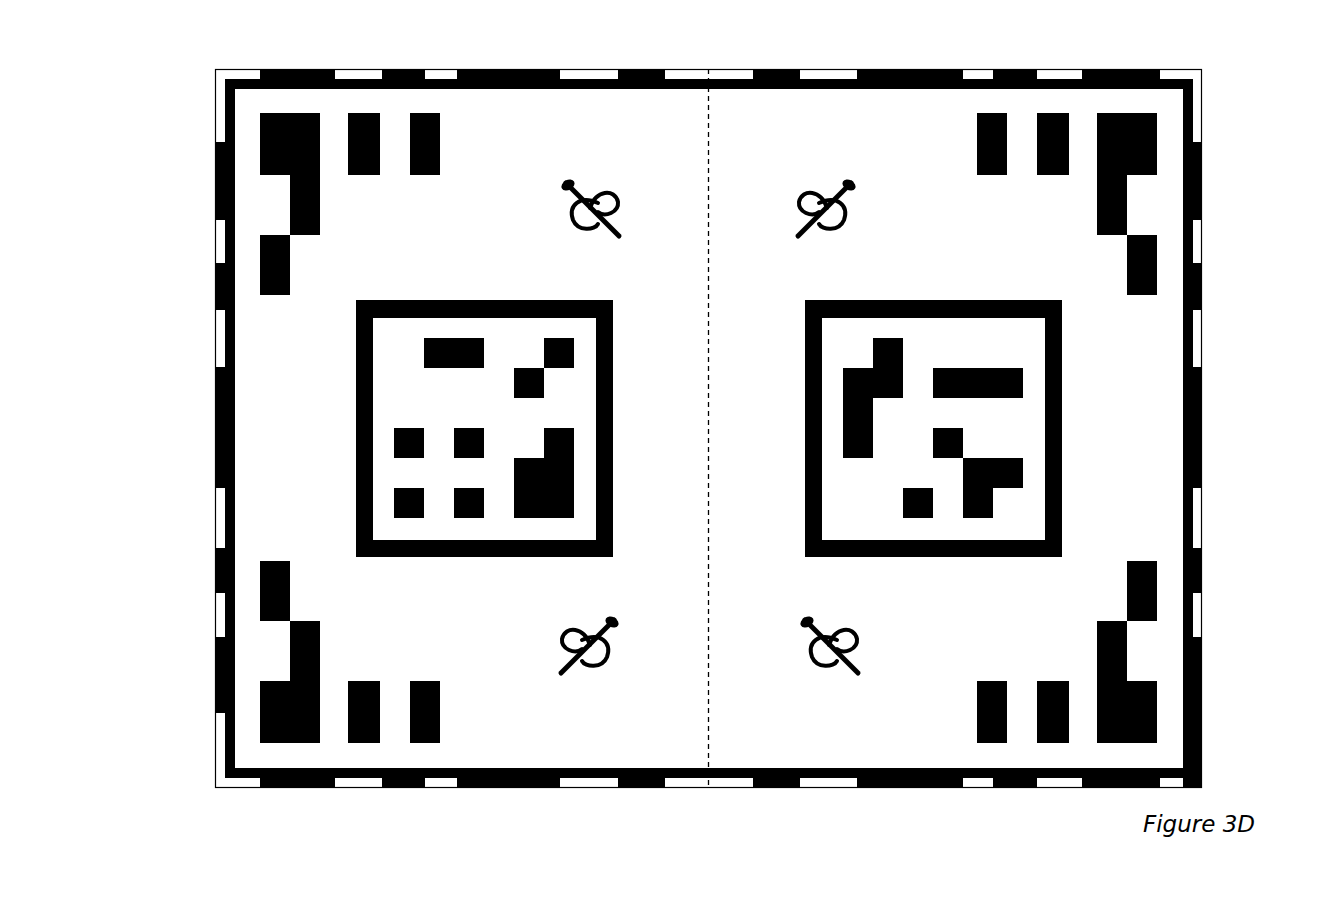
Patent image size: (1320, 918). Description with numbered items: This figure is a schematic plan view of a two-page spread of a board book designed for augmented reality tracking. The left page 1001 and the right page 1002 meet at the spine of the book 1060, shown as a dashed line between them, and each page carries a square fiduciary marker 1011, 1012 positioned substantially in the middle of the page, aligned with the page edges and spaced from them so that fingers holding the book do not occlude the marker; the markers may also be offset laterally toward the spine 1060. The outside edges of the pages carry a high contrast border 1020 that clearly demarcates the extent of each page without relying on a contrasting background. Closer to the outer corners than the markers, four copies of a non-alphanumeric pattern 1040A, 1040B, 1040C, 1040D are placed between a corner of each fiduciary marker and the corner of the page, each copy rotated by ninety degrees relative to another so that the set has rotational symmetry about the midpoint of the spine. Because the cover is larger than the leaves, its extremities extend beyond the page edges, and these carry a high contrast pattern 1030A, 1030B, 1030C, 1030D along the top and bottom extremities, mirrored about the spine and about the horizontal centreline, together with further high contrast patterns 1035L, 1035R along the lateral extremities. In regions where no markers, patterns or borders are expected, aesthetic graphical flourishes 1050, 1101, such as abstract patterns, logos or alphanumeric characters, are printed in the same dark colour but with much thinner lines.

The page 1001 is at (561, 124).
The page 1002 is at (843, 125).
The fiduciary marker 1011 is at (348, 383).
The fiduciary marker 1012 is at (1069, 383).
The high contrast border 1020 is at (830, 781).
The high contrast pattern 1030A is at (483, 64).
The high contrast pattern 1030B is at (1103, 64).
The high contrast pattern 1030C is at (402, 794).
The high contrast pattern 1030D is at (1008, 794).
The high contrast pattern 1035L is at (212, 563).
The high contrast pattern 1035R is at (1205, 563).
The non-alphanumeric pattern 1040A is at (1158, 128).
The non-alphanumeric pattern 1040B is at (259, 128).
The non-alphanumeric pattern 1040C is at (259, 713).
The non-alphanumeric pattern 1040D is at (1158, 728).
The aesthetic graphical flourish 1050 is at (589, 689).
The spine of the book 1060 is at (708, 717).
The aesthetic graphical flourish 1101 is at (241, 760).